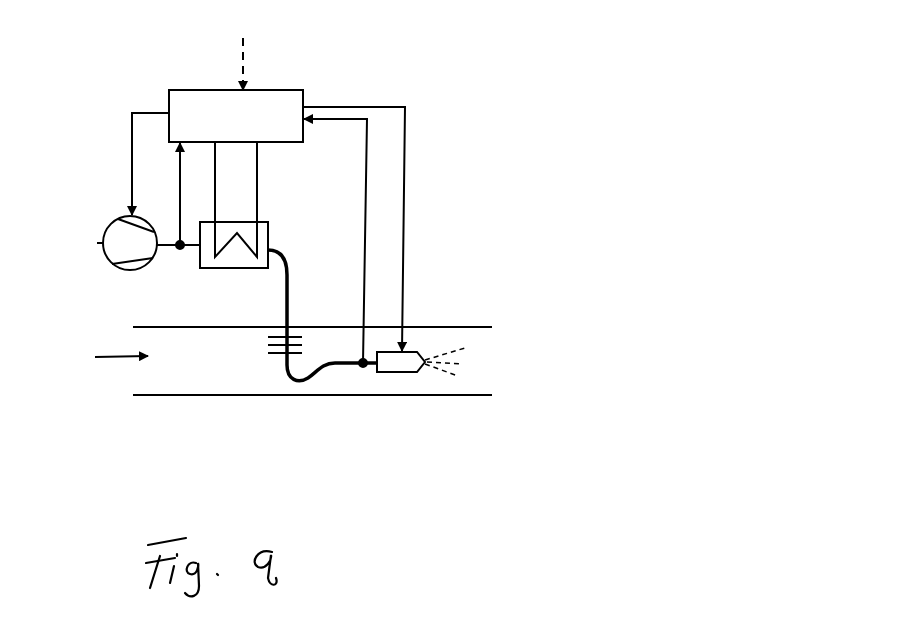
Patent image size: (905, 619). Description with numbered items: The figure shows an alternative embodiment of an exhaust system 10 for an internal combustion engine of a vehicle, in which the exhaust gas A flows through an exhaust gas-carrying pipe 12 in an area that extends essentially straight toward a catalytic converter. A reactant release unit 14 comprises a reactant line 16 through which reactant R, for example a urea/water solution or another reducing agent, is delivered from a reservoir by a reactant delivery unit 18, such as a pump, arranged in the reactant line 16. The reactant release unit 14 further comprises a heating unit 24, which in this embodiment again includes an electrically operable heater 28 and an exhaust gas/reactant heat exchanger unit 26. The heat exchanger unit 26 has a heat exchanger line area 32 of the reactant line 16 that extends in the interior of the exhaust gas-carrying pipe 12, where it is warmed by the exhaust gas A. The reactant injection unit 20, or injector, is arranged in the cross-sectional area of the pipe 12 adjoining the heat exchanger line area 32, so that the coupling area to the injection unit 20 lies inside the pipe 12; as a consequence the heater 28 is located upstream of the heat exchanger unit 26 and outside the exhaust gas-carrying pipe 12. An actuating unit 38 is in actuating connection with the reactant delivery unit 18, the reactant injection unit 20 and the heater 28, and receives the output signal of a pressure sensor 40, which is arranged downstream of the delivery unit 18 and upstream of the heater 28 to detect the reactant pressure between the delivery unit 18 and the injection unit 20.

The exhaust system 10 is at (502, 87).
The exhaust gas-carrying pipe 12 is at (473, 395).
The reactant release unit 14 is at (372, 78).
The reactant line 16 is at (97, 244).
The reactant delivery unit 18 is at (113, 218).
The reactant injection unit 20 is at (420, 350).
The heating unit 24 is at (251, 370).
The exhaust gas/reactant heat exchanger unit 26 is at (346, 381).
The electrically operable heater 28 is at (227, 269).
The heat exchanger line area 32 is at (368, 357).
The actuating unit 38 is at (266, 92).
The pressure sensor 40 is at (180, 250).
The reactant R is at (464, 363).
The exhaust gas A is at (105, 360).